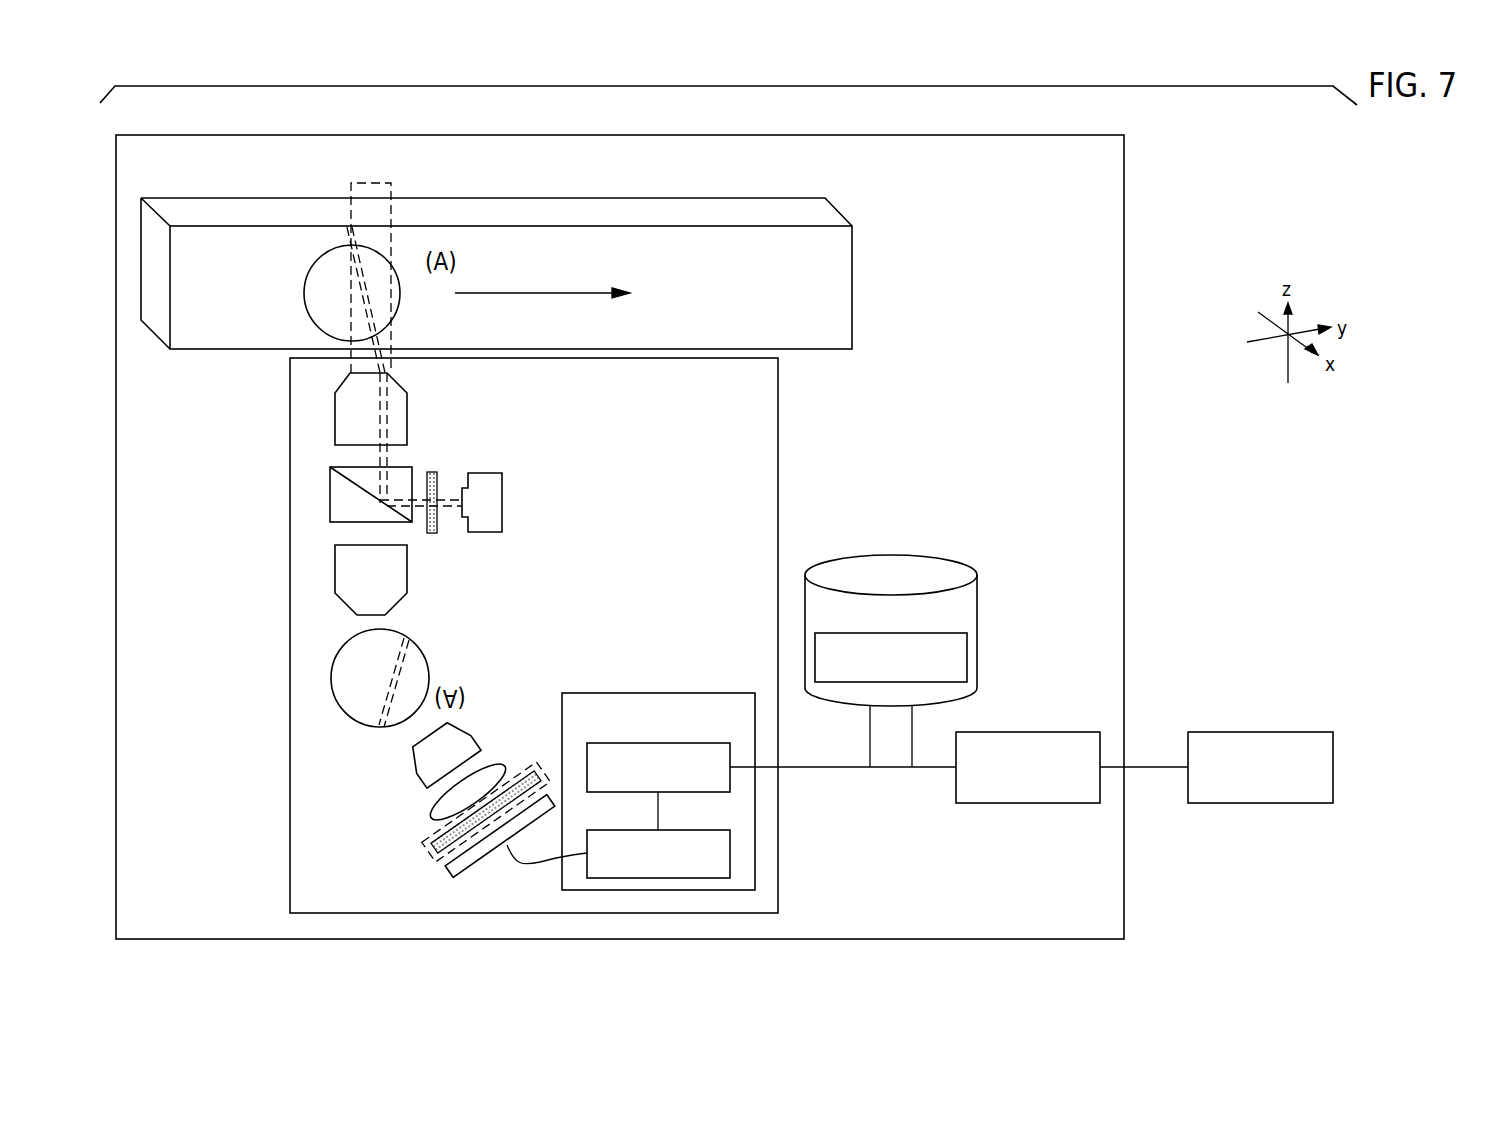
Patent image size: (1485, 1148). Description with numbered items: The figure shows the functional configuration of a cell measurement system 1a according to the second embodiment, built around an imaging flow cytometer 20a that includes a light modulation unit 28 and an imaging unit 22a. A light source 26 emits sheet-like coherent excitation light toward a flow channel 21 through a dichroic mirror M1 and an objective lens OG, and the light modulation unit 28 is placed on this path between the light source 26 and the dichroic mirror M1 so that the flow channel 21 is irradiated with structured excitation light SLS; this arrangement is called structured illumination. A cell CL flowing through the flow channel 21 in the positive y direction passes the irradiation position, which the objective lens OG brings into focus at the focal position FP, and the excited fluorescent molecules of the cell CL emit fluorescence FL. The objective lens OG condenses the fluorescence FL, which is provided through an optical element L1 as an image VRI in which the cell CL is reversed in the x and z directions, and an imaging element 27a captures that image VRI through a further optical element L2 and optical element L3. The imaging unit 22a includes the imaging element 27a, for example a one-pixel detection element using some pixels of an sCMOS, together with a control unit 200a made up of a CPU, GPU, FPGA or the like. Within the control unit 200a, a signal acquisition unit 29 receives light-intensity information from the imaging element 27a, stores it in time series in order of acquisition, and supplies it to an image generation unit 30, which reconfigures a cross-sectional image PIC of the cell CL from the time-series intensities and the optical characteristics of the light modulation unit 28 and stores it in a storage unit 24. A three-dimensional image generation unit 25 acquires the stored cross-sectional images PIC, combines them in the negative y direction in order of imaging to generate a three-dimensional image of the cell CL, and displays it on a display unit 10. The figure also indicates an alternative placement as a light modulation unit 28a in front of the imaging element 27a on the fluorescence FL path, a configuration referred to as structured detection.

The cell measurement system 1a is at (1165, 204).
The imaging flow cytometer 20a is at (1124, 332).
The flow channel 21 is at (730, 197).
The imaging unit 22a is at (778, 462).
The control unit 200a is at (673, 692).
The image generation unit 30 is at (675, 743).
The signal acquisition unit 29 is at (675, 830).
The storage unit 24 is at (891, 615).
The three-dimensional image generation unit 25 is at (1047, 732).
The display unit 10 is at (1280, 732).
The light source 26 is at (502, 503).
The light modulation unit 28 is at (437, 472).
The light modulation unit 28a is at (428, 852).
The imaging element 27a is at (447, 870).
The structured excitation light SLS is at (357, 238).
The cell CL is at (304, 287).
The fluorescence FL is at (362, 268).
The focal position FP is at (352, 367).
The objective lens OG is at (407, 412).
The dichroic mirror M1 is at (340, 467).
The optical element L1 is at (407, 568).
The image VRI is at (428, 667).
The optical element L2 is at (412, 770).
The optical element L3 is at (492, 770).
The cross-sectional image PIC is at (890, 632).